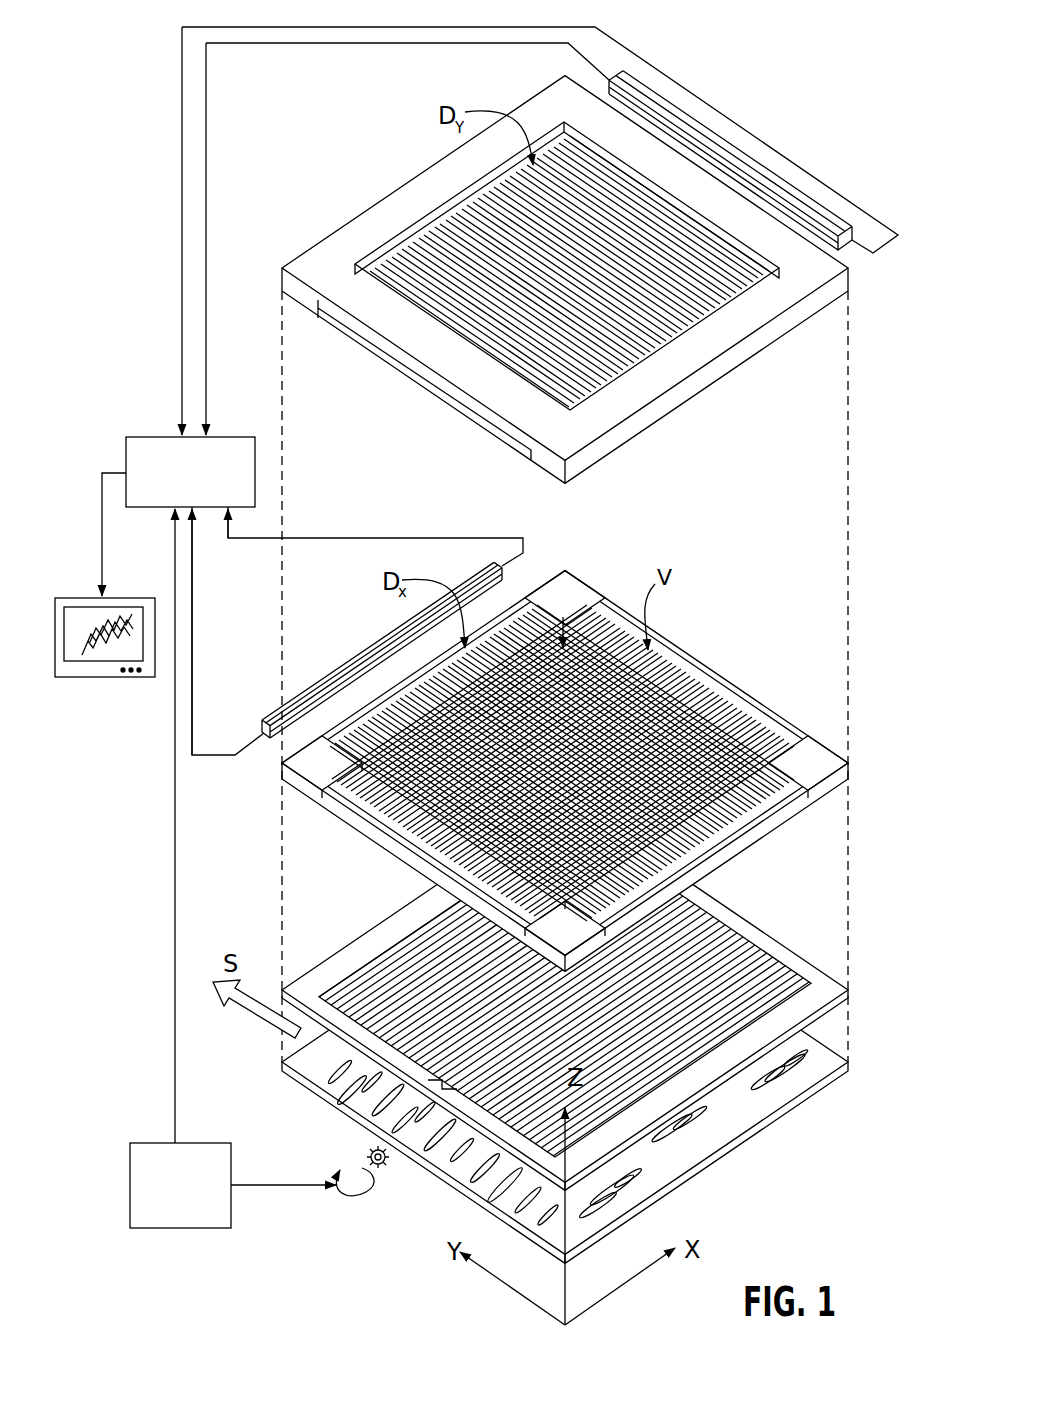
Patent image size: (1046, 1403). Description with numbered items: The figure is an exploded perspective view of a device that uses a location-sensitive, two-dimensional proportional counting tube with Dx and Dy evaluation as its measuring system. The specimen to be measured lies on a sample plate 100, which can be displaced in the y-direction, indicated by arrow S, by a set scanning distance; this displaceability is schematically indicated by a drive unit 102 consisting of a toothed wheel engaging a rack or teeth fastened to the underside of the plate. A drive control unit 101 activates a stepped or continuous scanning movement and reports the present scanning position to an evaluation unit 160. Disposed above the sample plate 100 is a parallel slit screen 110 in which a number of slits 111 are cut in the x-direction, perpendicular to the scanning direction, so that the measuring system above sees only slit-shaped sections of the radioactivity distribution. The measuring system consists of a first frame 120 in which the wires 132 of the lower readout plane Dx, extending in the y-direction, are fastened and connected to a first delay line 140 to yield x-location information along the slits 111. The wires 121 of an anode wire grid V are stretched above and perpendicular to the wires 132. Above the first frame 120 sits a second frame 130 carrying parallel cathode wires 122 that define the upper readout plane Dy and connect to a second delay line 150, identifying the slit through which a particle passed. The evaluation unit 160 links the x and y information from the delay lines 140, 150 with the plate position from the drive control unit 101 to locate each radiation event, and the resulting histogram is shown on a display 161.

The sample plate 100 is at (740, 1128).
The drive control unit 101 is at (188, 1228).
The drive unit 102 is at (374, 1150).
The parallel slit screen 110 is at (750, 946).
The slits 111 is at (433, 1090).
The first frame 120 is at (380, 847).
The wires of anode wire grid 121 is at (705, 651).
The cathode wires 122 is at (447, 250).
The second frame 130 is at (705, 378).
The wires of lower readout plane 132 is at (714, 864).
The first delay line 140 is at (378, 632).
The second delay line 150 is at (762, 165).
The evaluation unit 160 is at (126, 452).
The display 161 is at (75, 665).